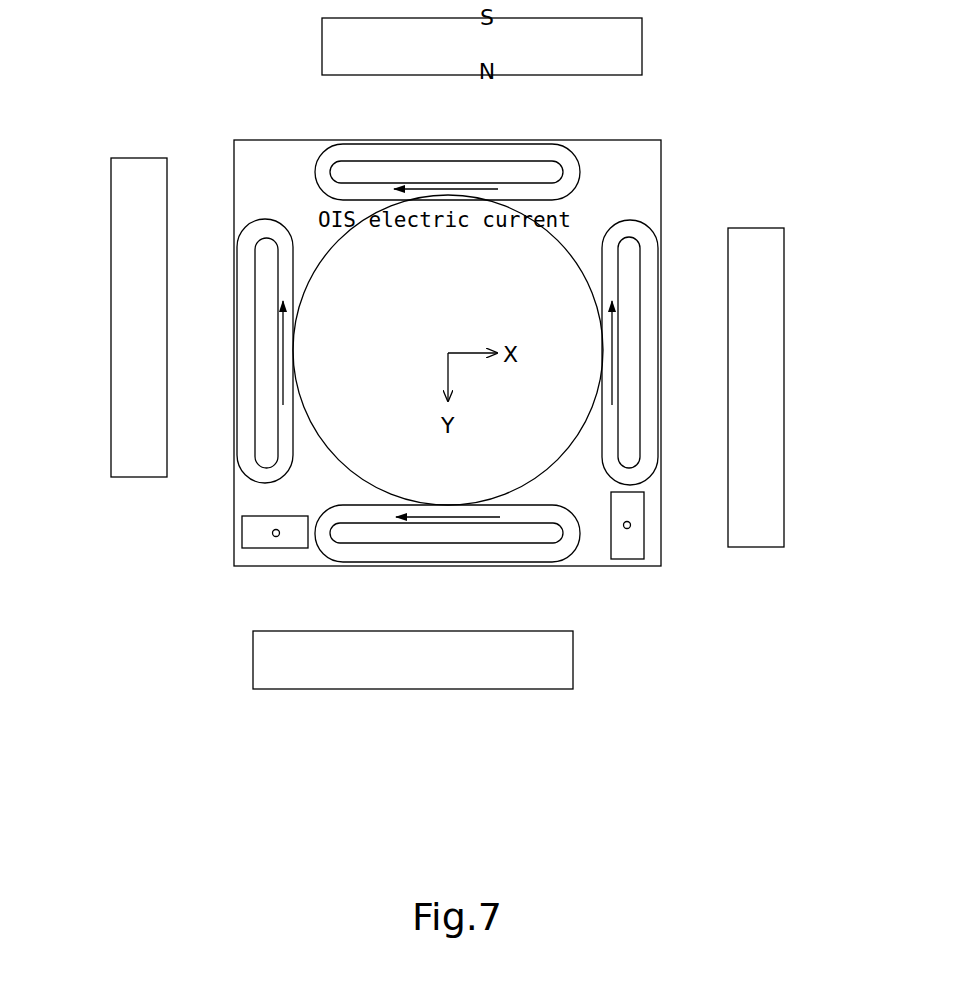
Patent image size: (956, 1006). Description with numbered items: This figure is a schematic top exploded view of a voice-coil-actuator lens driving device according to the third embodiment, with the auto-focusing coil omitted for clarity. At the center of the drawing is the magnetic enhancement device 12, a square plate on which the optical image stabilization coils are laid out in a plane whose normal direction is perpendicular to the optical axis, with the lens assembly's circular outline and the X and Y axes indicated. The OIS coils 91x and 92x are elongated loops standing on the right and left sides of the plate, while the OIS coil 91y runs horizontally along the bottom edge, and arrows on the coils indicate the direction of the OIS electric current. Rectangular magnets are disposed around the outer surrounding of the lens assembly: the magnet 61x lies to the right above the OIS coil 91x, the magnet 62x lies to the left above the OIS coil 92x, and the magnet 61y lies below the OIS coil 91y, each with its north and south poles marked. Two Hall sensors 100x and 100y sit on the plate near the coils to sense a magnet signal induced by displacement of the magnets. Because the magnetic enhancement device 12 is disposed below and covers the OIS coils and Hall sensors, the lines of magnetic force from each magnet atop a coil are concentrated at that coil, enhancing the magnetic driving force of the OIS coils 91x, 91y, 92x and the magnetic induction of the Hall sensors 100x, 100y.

The magnetic enhancement device 12 is at (642, 170).
The magnet 61x is at (765, 463).
The magnet 61y is at (514, 660).
The magnet 62x is at (133, 460).
The OIS coil 91x is at (642, 470).
The OIS coil 91y is at (532, 550).
The OIS coil 92x is at (253, 468).
The Hall sensor 100x is at (627, 550).
The Hall sensor 100y is at (269, 545).